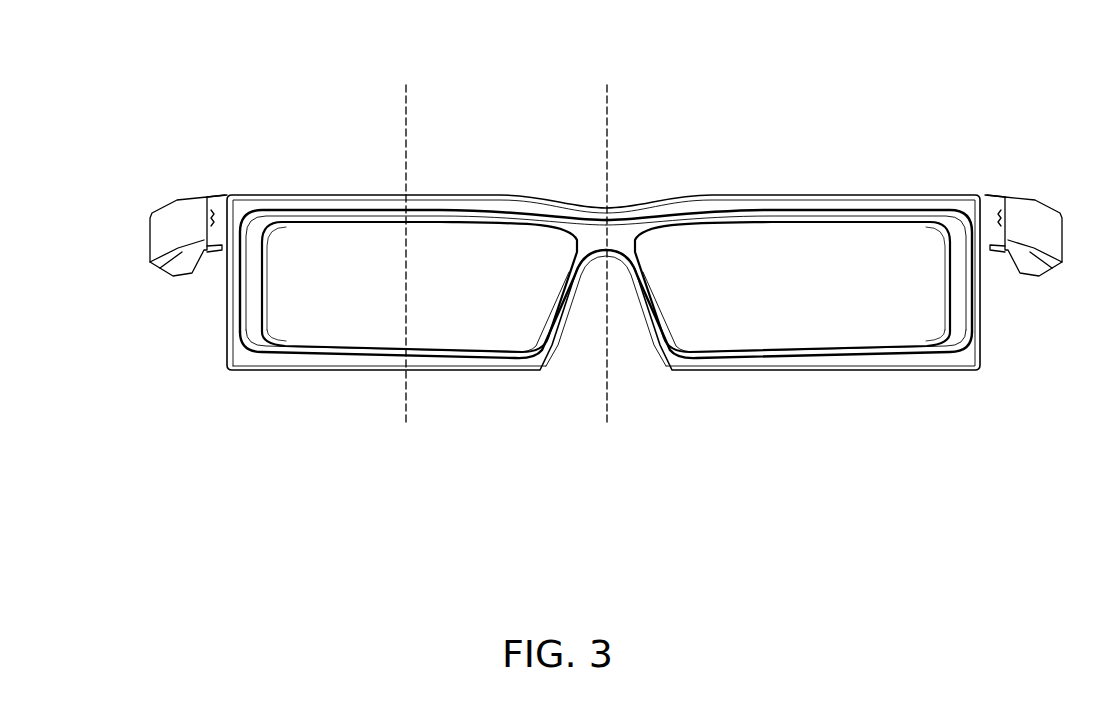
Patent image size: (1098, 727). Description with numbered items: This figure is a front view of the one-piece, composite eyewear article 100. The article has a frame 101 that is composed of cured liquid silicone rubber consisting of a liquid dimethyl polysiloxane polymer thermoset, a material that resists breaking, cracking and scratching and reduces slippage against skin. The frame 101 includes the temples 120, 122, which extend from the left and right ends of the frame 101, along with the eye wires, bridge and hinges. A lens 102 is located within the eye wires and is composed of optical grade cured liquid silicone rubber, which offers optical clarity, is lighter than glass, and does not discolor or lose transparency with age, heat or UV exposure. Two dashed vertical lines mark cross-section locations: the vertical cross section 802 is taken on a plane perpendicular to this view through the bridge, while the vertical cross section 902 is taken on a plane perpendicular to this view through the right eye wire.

The one-piece, composite eyewear article 100 is at (258, 76).
The frame 101 is at (747, 193).
The lens 102 is at (807, 328).
The temple 120 is at (162, 200).
The temple 122 is at (1043, 198).
The vertical cross section 902 is at (406, 85).
The vertical cross section 802 is at (607, 85).